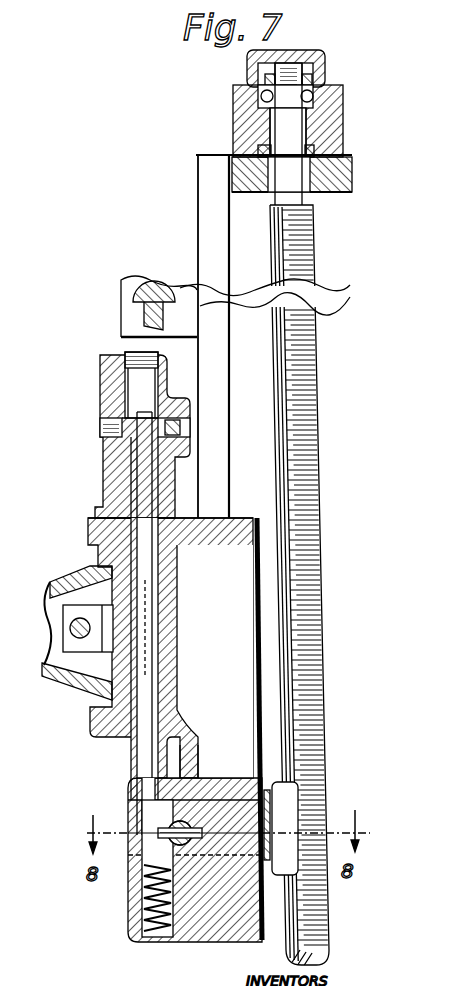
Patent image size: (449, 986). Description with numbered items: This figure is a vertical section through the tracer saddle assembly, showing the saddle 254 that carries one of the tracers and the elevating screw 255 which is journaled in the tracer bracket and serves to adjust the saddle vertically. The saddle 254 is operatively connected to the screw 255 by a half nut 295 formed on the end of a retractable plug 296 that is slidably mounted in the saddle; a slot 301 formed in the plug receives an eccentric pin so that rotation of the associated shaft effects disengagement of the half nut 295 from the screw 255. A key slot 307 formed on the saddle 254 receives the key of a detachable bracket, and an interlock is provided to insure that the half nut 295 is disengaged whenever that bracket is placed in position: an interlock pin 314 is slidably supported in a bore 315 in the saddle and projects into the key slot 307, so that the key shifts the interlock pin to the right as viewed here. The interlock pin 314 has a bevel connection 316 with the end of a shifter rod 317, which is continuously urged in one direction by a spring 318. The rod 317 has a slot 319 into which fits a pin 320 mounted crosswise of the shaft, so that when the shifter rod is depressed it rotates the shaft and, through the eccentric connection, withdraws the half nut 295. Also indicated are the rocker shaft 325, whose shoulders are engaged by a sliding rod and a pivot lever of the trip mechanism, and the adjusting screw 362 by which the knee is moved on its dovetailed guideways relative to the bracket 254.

The saddle 254 is at (222, 935).
The elevating screw 255 is at (322, 660).
The half nut 295 is at (262, 780).
The retractable plug 296 is at (204, 777).
The slot 301 is at (203, 777).
The key slot 307 is at (105, 456).
The interlock pin 314 is at (100, 423).
The bore 315 is at (190, 428).
The bevel connection 316 is at (135, 415).
The shifter rod 317 is at (137, 480).
The spring 318 is at (142, 915).
The slot 319 is at (158, 828).
The pin 320 is at (170, 853).
The rocker shaft 325 is at (151, 291).
The adjusting screw 362 is at (63, 629).